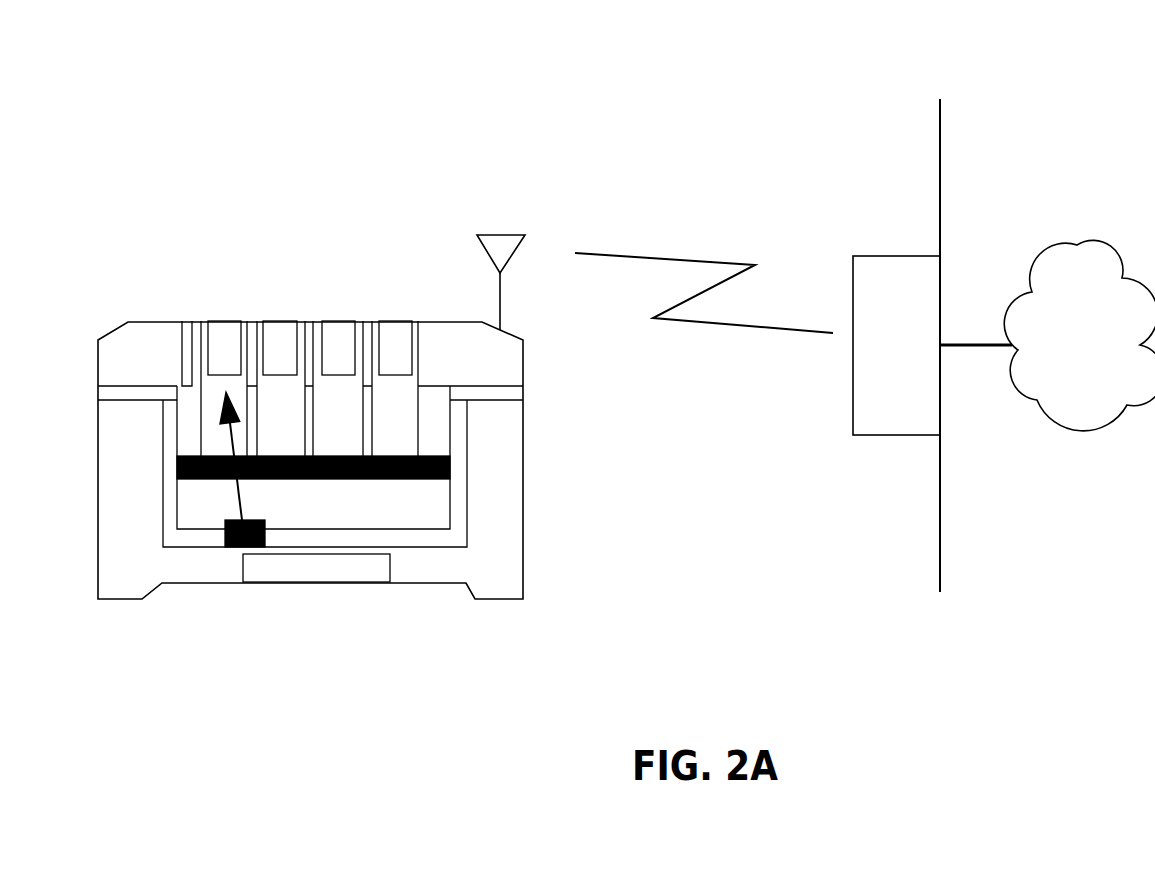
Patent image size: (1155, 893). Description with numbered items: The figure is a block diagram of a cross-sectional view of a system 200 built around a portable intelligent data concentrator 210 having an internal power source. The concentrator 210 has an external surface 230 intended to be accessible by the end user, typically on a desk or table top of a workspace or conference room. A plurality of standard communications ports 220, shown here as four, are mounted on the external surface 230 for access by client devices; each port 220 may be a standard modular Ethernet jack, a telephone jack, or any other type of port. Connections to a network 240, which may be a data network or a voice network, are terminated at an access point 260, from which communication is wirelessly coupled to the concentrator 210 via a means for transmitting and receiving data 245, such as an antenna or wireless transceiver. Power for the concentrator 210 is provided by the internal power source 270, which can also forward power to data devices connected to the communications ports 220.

The system 200 is at (683, 50).
The intelligent data concentrator 210 is at (523, 478).
The communications ports 220 is at (392, 312).
The external surface 230 is at (453, 310).
The means for transmitting and receiving data 245 is at (515, 305).
The internal power source 270 is at (300, 577).
The access point 260 is at (877, 368).
The network 240 is at (1103, 367).